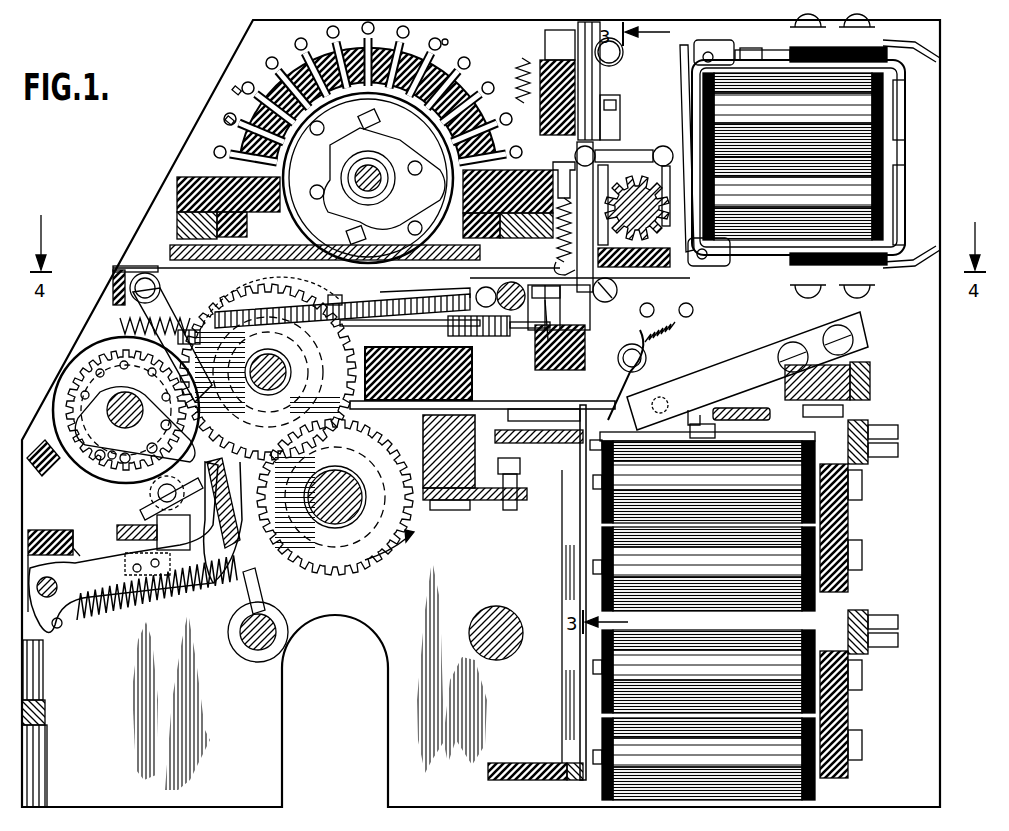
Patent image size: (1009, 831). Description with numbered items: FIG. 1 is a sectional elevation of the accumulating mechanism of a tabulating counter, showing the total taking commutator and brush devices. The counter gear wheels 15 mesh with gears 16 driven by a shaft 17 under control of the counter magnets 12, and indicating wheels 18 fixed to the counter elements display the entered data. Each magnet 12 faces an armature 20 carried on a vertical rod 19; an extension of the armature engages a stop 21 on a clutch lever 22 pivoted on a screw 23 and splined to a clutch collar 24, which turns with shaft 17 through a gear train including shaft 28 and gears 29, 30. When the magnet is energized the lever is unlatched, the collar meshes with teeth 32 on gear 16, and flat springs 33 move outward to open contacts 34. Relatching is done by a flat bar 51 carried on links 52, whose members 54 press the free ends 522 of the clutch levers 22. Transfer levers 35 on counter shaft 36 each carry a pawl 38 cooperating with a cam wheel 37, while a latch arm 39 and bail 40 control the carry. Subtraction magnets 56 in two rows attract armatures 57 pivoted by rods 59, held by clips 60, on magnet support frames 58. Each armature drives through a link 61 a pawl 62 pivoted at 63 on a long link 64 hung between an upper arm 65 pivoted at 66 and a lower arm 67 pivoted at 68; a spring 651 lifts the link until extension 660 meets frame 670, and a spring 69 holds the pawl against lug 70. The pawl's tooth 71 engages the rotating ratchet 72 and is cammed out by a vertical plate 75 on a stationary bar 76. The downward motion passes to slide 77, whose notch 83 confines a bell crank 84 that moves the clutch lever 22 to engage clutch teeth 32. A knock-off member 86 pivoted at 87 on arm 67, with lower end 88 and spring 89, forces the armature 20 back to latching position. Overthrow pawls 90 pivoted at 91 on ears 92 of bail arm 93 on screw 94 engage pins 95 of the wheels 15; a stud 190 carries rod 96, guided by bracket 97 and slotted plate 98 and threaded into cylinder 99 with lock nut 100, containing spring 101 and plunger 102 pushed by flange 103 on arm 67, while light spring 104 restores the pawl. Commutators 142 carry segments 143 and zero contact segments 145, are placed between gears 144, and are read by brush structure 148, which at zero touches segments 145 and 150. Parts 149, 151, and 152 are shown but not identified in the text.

The counter magnet 12 is at (745, 610).
The accumulating gear wheel 15 is at (65, 378).
The gear 16 is at (240, 300).
The shaft 17 is at (250, 362).
The indicating wheel 18 is at (52, 405).
The vertical rod 19 is at (562, 598).
The armature 20 is at (580, 535).
The stop 21 is at (508, 415).
The clutch lever 22 is at (488, 401).
The screw 23 is at (423, 436).
The clutch collar 24 is at (290, 350).
The shaft 28 is at (400, 540).
The gear 29 is at (312, 566).
The gear 30 is at (262, 508).
The clutch teeth 32 is at (262, 395).
The flat spring 33 is at (735, 360).
The contacts 34 is at (660, 442).
The transfer lever 35 is at (150, 540).
The counter shaft 36 is at (130, 395).
The counter cam wheel 37 is at (85, 480).
The pawl 38 is at (228, 452).
The latch arm 39 is at (225, 553).
The bail 40 is at (117, 526).
The flat bar 51 is at (745, 420).
The link 52 is at (805, 417).
The member 54 is at (700, 422).
The subtraction magnet 56 is at (795, 156).
The armature 57 is at (684, 90).
The magnet support frame 58 is at (905, 92).
The pivot rod 59 is at (708, 55).
The removable clip 60 is at (762, 62).
The link 61 is at (660, 138).
The pawl 62 is at (600, 152).
The pivot 63 is at (618, 290).
The long link 64 is at (618, 120).
The upper arm 65 is at (598, 50).
The pivot rod 66 is at (545, 55).
The lower arm 67 is at (559, 312).
The pivot rod 68 is at (535, 286).
The spring 69 is at (556, 250).
The lug 70 is at (560, 172).
The tooth 71 is at (606, 170).
The ratchet gear 72 is at (666, 168).
The vertical plate 75 is at (625, 232).
The stationary bar 76 is at (700, 268).
The slide 77 is at (650, 350).
The notch 83 is at (634, 372).
The bell crank 84 is at (585, 370).
The armature knock-off member 86 is at (694, 308).
The pivot 87 is at (650, 305).
The lower end 88 is at (612, 448).
The spring 89 is at (682, 322).
The overthrow preventing pawl 90 is at (168, 292).
The pivot 91 is at (145, 278).
The ear 92 is at (120, 268).
The bail arm 93 is at (112, 285).
The screw 94 is at (75, 350).
The pin 95 is at (82, 392).
The rod 96 is at (365, 304).
The bracket 97 is at (410, 320).
The slotted plate 98 is at (410, 292).
The cylinder 99 is at (485, 336).
The lock nut 100 is at (473, 316).
The spring 101 is at (484, 306).
The plunger 102 is at (530, 336).
The extending flange 103 is at (511, 308).
The light spring 104 is at (460, 365).
The commutator 142 is at (300, 62).
The segment 143 is at (440, 56).
The gear 144 is at (322, 291).
The zero contact segment 145 is at (250, 212).
The brush structure 148 is at (400, 190).
The block 149 is at (445, 228).
The segment 150 is at (505, 147).
The pin 151 is at (236, 88).
The bolt 152 is at (226, 118).
The stud 190 is at (190, 330).
The free end 522 is at (705, 440).
The spring 651 is at (515, 80).
The extension 660 is at (586, 110).
The frame 670 is at (592, 80).